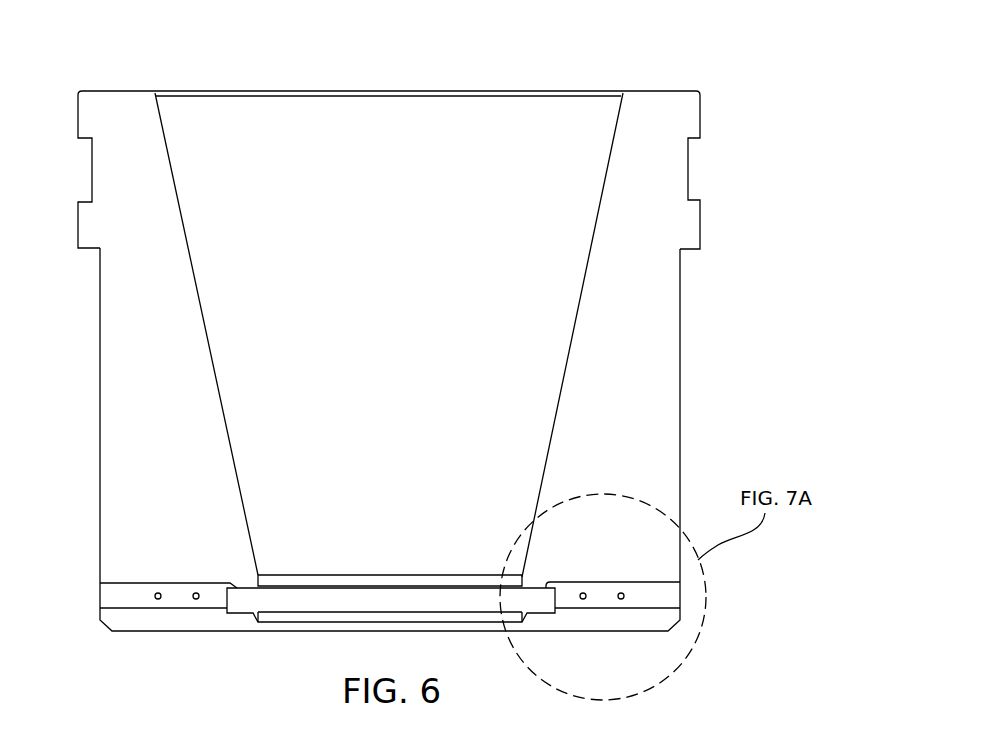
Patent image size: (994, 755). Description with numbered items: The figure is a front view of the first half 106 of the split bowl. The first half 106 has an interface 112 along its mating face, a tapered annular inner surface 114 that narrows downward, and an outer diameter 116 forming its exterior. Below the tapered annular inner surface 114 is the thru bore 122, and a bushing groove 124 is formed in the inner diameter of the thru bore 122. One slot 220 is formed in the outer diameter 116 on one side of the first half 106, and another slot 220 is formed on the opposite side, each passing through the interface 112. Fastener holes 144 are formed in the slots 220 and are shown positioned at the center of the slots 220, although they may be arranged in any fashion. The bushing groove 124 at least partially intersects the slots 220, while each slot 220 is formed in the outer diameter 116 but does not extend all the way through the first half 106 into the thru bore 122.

The first half 106 is at (422, 349).
The interface 112 is at (678, 170).
The tapered annular inner surface 114 is at (610, 152).
The outer diameter 116 is at (682, 382).
The thru bore 122 is at (262, 578).
The bushing groove 124 is at (242, 614).
The fastener holes 144 is at (159, 601).
The slot 220 is at (100, 596).